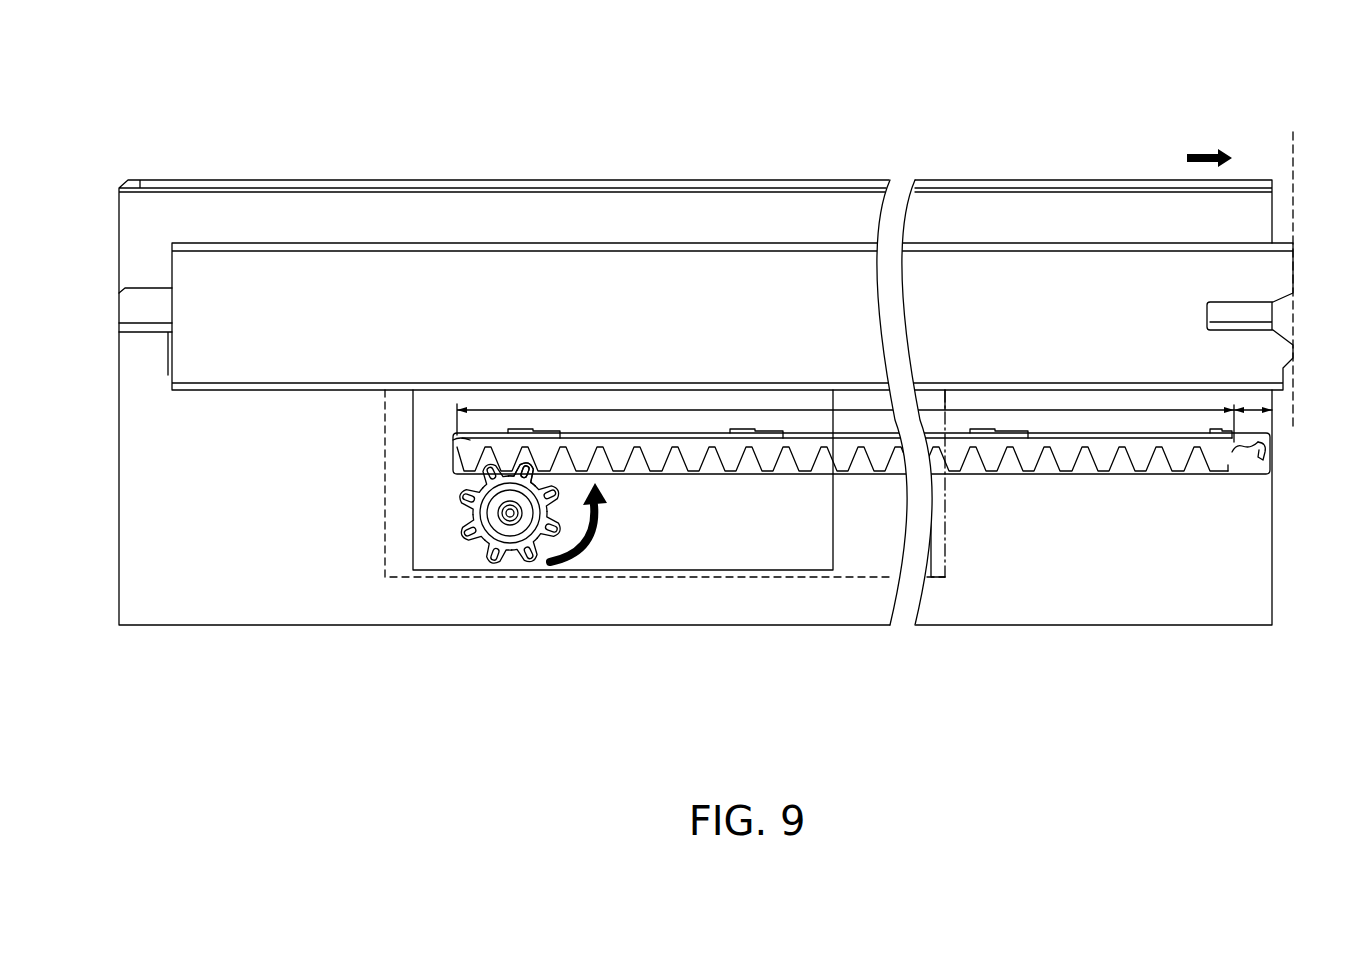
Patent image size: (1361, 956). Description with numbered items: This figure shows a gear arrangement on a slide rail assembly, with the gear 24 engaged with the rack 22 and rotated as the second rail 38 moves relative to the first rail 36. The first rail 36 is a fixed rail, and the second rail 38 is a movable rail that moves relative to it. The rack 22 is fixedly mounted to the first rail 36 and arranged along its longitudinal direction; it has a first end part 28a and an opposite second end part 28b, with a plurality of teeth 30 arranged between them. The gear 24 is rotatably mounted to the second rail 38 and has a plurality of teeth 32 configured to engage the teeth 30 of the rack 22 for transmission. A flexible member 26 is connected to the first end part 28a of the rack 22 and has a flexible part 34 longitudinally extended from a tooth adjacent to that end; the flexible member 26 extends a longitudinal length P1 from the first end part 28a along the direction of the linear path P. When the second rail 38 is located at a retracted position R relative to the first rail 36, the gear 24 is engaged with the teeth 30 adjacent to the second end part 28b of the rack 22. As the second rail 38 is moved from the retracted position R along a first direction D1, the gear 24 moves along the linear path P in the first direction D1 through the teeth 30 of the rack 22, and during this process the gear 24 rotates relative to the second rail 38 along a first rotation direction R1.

The rack 22 is at (733, 473).
The gear 24 is at (478, 548).
The flexible member 26 is at (1253, 442).
The first end part 28a is at (1232, 447).
The second end part 28b is at (455, 443).
The teeth 30 is at (508, 448).
The teeth 32 is at (520, 477).
The flexible part 34 is at (1263, 455).
The first rail 36 is at (125, 181).
The second rail 38 is at (388, 432).
The linear path P is at (750, 410).
The longitudinal length P1 is at (1252, 410).
The retracted position R is at (1295, 270).
The first rotation direction R1 is at (592, 550).
The first direction D1 is at (1194, 158).